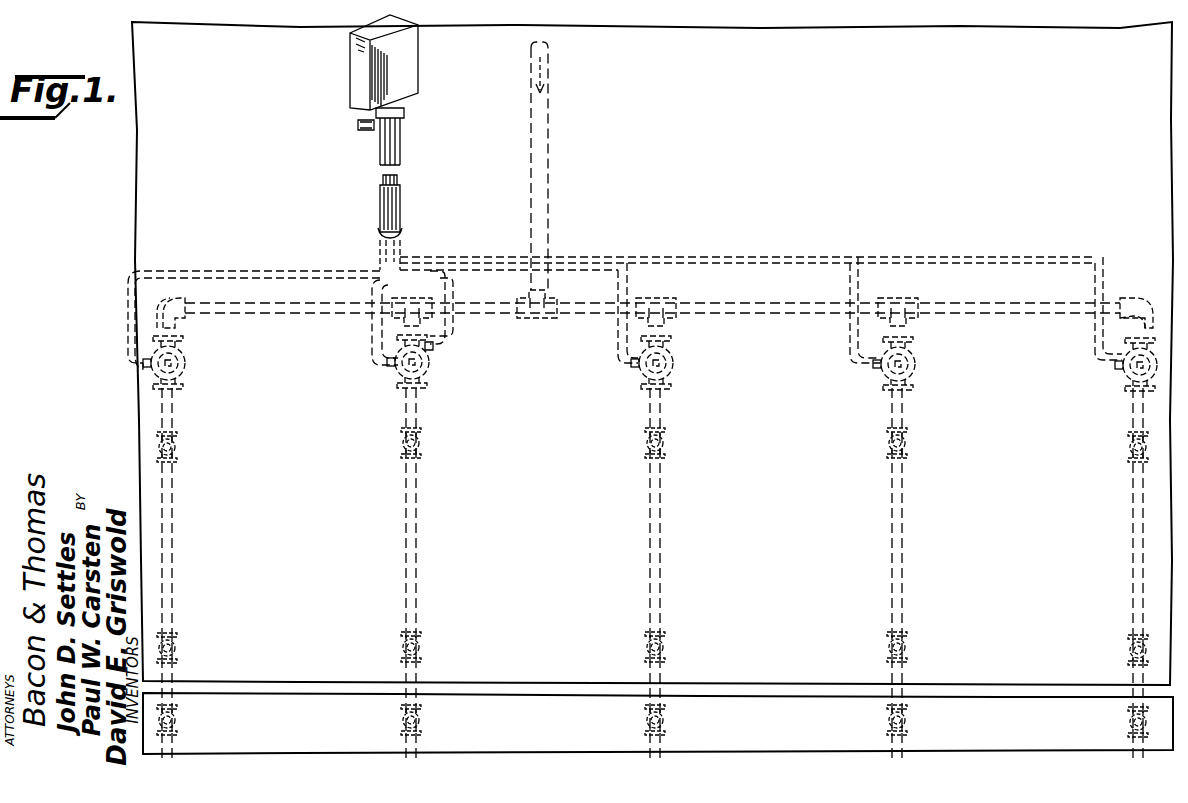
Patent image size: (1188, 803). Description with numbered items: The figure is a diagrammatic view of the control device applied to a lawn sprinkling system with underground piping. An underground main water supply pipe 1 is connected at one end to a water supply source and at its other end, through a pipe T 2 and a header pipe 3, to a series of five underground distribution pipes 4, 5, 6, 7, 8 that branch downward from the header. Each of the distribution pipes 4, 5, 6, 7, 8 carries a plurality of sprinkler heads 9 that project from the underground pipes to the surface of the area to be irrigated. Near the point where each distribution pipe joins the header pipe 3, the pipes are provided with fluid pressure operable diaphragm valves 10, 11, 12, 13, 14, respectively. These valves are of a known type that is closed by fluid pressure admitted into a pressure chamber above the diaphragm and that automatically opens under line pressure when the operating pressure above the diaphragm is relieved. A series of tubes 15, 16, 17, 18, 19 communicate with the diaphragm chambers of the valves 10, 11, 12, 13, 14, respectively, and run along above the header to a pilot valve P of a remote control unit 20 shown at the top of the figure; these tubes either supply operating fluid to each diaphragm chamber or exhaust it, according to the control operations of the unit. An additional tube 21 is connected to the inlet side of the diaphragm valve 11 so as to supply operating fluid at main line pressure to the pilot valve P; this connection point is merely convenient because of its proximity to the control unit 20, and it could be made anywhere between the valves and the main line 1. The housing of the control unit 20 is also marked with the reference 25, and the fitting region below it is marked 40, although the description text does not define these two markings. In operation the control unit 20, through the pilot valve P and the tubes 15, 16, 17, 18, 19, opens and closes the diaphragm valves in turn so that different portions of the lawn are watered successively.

The main water supply pipe 1 is at (550, 170).
The pipe T 2 is at (532, 322).
The header pipe 3 is at (777, 312).
The distribution pipe 4 is at (174, 570).
The distribution pipe 5 is at (418, 540).
The distribution pipe 6 is at (662, 542).
The distribution pipe 7 is at (904, 530).
The distribution pipe 8 is at (1132, 540).
The sprinkler head 9 is at (1110, 720).
The diaphragm valve 10 is at (186, 372).
The diaphragm valve 11 is at (428, 375).
The diaphragm valve 12 is at (672, 376).
The diaphragm valve 13 is at (914, 376).
The diaphragm valve 14 is at (1122, 385).
The tube 15 is at (200, 262).
The tube 16 is at (372, 346).
The tube 17 is at (616, 345).
The tube 18 is at (848, 345).
The tube 19 is at (1093, 348).
The remote control unit 20 is at (346, 74).
The additional tube 21 is at (455, 342).
The controller face 25 is at (416, 62).
The coupling 40 is at (356, 135).
The pilot valve P is at (414, 116).